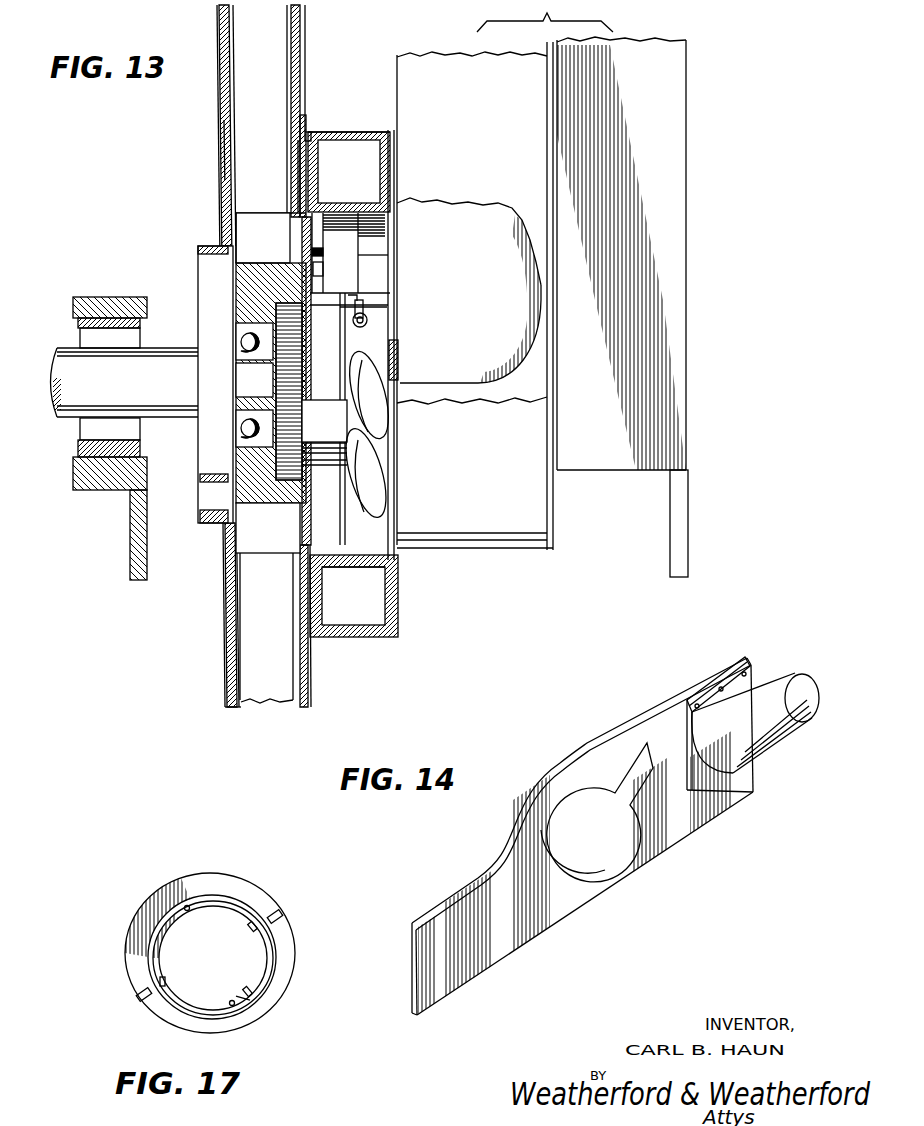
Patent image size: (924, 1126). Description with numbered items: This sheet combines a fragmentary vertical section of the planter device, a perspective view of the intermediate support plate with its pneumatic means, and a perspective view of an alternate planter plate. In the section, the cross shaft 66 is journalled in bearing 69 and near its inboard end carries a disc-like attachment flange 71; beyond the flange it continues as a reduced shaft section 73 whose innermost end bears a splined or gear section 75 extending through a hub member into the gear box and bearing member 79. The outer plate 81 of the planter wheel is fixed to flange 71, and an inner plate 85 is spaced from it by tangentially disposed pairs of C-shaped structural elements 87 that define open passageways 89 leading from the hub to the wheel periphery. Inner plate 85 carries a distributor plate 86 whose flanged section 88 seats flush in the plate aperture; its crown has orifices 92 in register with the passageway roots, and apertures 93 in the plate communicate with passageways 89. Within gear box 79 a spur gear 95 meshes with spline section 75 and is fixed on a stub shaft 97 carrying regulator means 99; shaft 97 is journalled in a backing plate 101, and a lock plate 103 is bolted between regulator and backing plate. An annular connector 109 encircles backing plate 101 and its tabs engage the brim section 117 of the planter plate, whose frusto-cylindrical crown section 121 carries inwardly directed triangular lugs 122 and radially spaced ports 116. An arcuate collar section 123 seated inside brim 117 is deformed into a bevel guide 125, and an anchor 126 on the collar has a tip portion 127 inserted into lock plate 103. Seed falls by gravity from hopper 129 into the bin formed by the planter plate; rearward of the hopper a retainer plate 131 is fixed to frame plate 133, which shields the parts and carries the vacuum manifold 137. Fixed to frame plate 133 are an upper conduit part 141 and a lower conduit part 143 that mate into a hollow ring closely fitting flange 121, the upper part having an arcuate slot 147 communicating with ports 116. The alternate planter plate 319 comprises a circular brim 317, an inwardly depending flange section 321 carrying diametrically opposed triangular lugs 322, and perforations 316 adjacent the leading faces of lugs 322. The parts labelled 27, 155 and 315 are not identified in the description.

In FIG. 13, the tube 27 is at (683, 508).
In FIG. 13, the cross shaft 66 is at (182, 362).
In FIG. 13, the bearing 69 is at (144, 311).
In FIG. 13, the attachment flange 71 is at (199, 250).
In FIG. 13, the reduced shaft section 73 is at (236, 379).
In FIG. 13, the splined or gear section 75 is at (282, 381).
In FIG. 13, the gear box and bearing member 79 is at (241, 336).
In FIG. 13, the outer plate 81 is at (222, 95).
In FIG. 13, the inner plate 85 is at (300, 47).
In FIG. 13, the distributor plate 86 is at (285, 213).
In FIG. 13, the structural elements 87 is at (290, 17).
In FIG. 13, the flanged section 88 is at (298, 194).
In FIG. 13, the passageways 89 is at (240, 33).
In FIG. 13, the orifices 92 is at (292, 241).
In FIG. 13, the apertures 93 is at (242, 228).
In FIG. 13, the spur gear 95 is at (292, 495).
In FIG. 13, the stub shaft 97 is at (333, 443).
In FIG. 13, the regulator means 99 is at (382, 490).
In FIG. 13, the backing plate 101 is at (306, 578).
In FIG. 13, the lock plate 103 is at (311, 350).
In FIG. 13, the annular connector 109 is at (303, 117).
In FIG. 13, the ports 116 is at (316, 262).
In FIG. 13, the brim section 117 is at (307, 135).
In FIG. 13, the crown section 121 is at (348, 236).
In FIG. 13, the lugs 122 is at (316, 243).
In FIG. 13, the arcuate collar section 123 is at (368, 320).
In FIG. 13, the bevel guide 125 is at (345, 533).
In FIG. 13, the anchor 126 is at (364, 308).
In FIG. 13, the tip portion 127 is at (358, 296).
In FIG. 13, the hopper 129 is at (478, 113).
In FIG. 13, the retainer plate 131 is at (401, 560).
In FIG. 13, the frame plate 133 is at (390, 168).
In FIG. 14, the frame plate 133 is at (455, 896).
In FIG. 13, the vacuum manifold 137 is at (455, 268).
In FIG. 14, the vacuum manifold 137 is at (755, 690).
In FIG. 13, the upper conduit part 141 is at (364, 131).
In FIG. 13, the lower conduit part 143 is at (362, 637).
In FIG. 13, the arcuate slot 147 is at (326, 569).
In FIG. 13, the tube section 155 is at (222, 143).
In FIG. 17, the tab 315 is at (284, 916).
In FIG. 17, the perforations 316 is at (188, 906).
In FIG. 17, the circular brim 317 is at (262, 895).
In FIG. 17, the alternate planter plate 319 is at (122, 882).
In FIG. 17, the flange section 321 is at (275, 972).
In FIG. 17, the lugs 322 is at (252, 928).